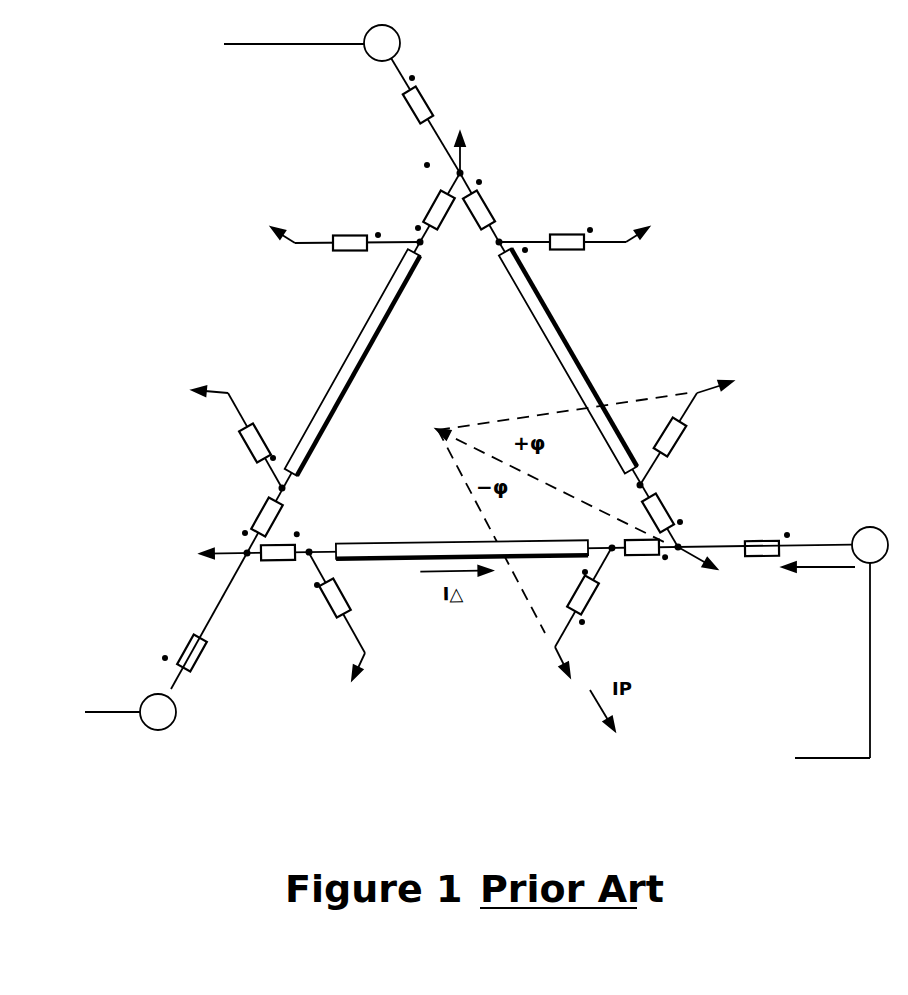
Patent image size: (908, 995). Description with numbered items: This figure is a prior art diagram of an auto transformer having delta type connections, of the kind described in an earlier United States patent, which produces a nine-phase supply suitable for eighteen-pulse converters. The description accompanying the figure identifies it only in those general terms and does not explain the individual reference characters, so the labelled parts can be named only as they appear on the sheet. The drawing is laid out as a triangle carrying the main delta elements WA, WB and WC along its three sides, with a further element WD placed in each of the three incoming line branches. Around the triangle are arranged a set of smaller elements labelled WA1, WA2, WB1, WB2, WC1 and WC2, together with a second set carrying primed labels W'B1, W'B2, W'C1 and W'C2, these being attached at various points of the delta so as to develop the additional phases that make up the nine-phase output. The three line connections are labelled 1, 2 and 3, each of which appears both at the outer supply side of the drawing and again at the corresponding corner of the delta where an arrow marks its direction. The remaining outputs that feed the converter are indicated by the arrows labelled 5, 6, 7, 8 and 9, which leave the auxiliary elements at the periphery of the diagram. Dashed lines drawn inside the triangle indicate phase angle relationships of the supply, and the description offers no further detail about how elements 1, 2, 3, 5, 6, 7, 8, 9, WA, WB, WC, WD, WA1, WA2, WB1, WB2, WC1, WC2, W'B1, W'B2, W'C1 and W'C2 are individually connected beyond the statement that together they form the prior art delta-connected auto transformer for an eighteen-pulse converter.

The phase A line terminal 1 is at (783, 642).
The phase B line terminal 2 is at (166, 637).
The phase C line terminal 3 is at (345, 96).
The output lead of winding W'B1 5 is at (722, 375).
The output lead of winding W'C1 6 is at (353, 680).
The output lead of winding WA1 7 is at (641, 220).
The output lead of winding WB1 8 is at (568, 674).
The output lead of winding WC1 9 is at (202, 388).
The delta main winding A WA is at (461, 532).
The delta main winding B WB is at (352, 362).
The delta main winding C WC is at (568, 361).
The series line winding WD is at (432, 102).
The auxiliary winding WA1 is at (460, 228).
The auxiliary winding WA2 is at (465, 560).
The auxiliary winding WB1 is at (597, 597).
The auxiliary winding WB2 is at (245, 516).
The auxiliary winding WC1 is at (241, 440).
The auxiliary winding WC2 is at (499, 204).
The auxiliary winding W'B1 is at (688, 439).
The auxiliary winding W'B2 is at (422, 210).
The auxiliary winding W'C1 is at (355, 603).
The auxiliary winding W'C2 is at (681, 512).